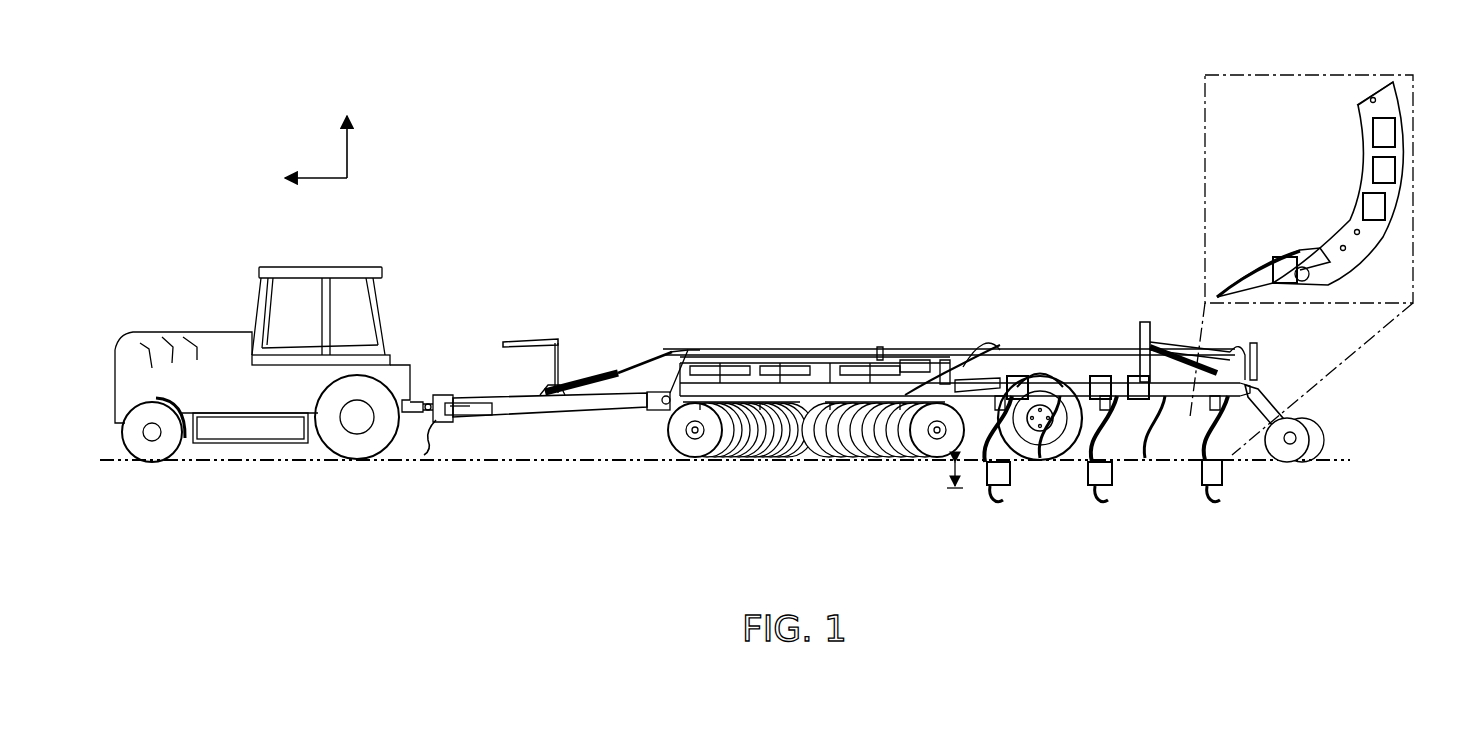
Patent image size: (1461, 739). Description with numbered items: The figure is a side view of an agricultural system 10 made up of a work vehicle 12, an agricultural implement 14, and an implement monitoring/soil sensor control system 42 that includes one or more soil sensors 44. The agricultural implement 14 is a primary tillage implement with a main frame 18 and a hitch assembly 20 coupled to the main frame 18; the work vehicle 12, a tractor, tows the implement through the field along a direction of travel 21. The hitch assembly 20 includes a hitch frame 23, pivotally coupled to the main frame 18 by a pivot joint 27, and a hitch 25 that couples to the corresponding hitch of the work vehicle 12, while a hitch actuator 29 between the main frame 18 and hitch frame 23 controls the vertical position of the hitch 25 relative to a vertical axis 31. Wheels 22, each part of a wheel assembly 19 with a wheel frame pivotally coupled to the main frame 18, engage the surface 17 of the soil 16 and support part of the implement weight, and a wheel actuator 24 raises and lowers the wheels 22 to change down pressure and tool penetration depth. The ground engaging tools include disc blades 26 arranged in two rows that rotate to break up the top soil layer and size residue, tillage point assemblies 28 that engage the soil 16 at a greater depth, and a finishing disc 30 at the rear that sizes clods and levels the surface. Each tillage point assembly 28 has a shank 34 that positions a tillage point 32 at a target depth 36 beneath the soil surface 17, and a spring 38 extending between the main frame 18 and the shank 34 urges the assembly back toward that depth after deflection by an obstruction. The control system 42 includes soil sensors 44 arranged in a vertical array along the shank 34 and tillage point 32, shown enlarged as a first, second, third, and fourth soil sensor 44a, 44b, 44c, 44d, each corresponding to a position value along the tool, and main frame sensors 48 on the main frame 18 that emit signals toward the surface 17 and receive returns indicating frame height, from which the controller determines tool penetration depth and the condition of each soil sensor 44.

The agricultural system 10 is at (807, 158).
The work vehicle 12 is at (303, 240).
The agricultural implement 14 is at (690, 328).
The soil 16 is at (528, 507).
The surface 17 is at (506, 460).
The main frame 18 is at (1055, 362).
The wheel assembly 19 is at (975, 334).
The hitch assembly 20 is at (506, 366).
The direction of travel 21 is at (318, 177).
The wheels 22 is at (1036, 383).
The hitch frame 23 is at (582, 408).
The wheel actuator 24 is at (974, 381).
The hitch 25 is at (426, 414).
The disc blades 26 is at (736, 476).
The pivot joint 27 is at (662, 404).
The tillage point assembly 28 is at (983, 500).
The hitch actuator 29 is at (636, 358).
The finishing disc 30 is at (1314, 464).
The vertical axis 31 is at (349, 150).
The tillage point 32 is at (1087, 488).
The shank 34 is at (1190, 518).
The target depth 36 is at (952, 478).
The spring 38 is at (905, 463).
The implement monitoring/soil sensor control system 42 is at (688, 203).
The soil sensors 44 is at (984, 488).
The first soil sensor 44a is at (1285, 257).
The second soil sensor 44b is at (1362, 205).
The third soil sensor 44c is at (1373, 170).
The fourth soil sensor 44d is at (1373, 135).
The main frame sensor 48 is at (944, 382).